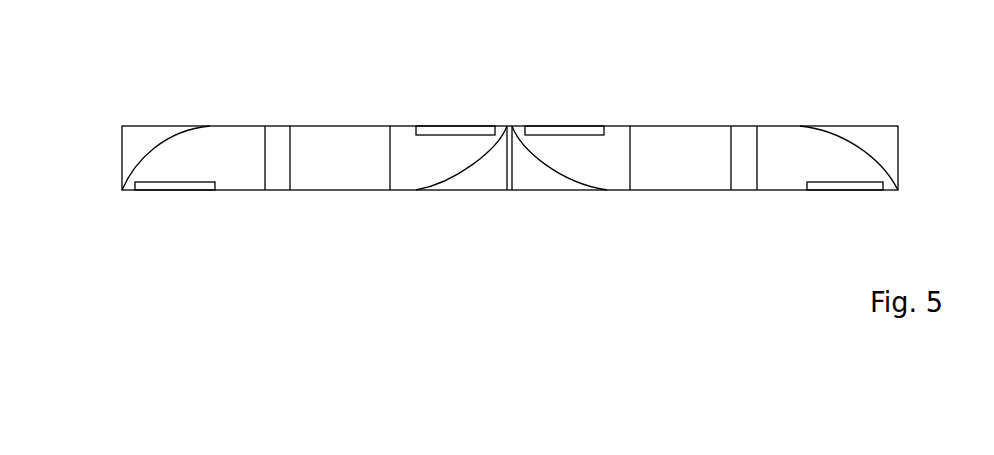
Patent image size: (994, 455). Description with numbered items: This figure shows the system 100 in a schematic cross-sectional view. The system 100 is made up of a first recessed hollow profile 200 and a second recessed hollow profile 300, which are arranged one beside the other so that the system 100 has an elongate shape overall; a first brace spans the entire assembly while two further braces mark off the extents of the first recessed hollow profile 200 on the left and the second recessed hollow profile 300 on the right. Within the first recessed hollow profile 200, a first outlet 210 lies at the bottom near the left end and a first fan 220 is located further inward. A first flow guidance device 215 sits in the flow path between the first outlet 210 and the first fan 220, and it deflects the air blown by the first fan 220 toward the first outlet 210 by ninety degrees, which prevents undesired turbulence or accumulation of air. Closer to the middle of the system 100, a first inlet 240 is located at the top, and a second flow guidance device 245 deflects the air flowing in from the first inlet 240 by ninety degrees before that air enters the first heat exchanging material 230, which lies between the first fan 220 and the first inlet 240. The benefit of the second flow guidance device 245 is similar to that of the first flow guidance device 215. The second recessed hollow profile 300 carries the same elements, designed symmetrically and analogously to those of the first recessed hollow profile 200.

The system 100 is at (903, 92).
The first recessed hollow profile 200 is at (513, 315).
The second recessed hollow profile 300 is at (902, 315).
The first outlet 210 is at (172, 183).
The first flow guidance device 215 is at (143, 135).
The first fan 220 is at (277, 175).
The first heat exchanging material 230 is at (352, 178).
The first inlet 240 is at (463, 130).
The second flow guidance device 245 is at (478, 175).